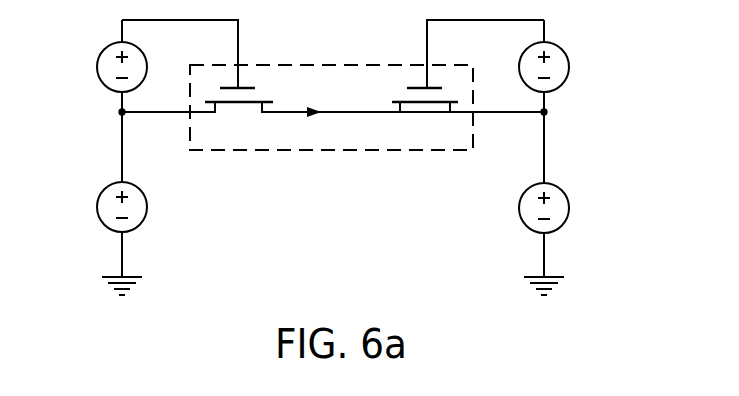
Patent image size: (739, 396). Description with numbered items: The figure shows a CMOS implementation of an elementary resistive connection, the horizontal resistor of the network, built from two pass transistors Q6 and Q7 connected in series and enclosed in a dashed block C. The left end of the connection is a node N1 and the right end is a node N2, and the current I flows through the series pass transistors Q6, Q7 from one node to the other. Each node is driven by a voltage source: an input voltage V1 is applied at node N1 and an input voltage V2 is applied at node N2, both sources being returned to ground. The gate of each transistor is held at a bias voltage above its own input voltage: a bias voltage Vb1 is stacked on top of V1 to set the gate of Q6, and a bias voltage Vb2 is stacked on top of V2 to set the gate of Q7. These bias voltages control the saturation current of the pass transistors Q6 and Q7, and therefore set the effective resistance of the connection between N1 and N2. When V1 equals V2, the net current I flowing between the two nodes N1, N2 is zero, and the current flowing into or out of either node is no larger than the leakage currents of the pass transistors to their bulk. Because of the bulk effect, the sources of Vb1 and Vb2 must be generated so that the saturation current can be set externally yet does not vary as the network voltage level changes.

The node N1 is at (120, 112).
The node N2 is at (546, 112).
The bias voltage Vb1 is at (135, 67).
The bias voltage Vb2 is at (558, 67).
The input voltage V1 is at (120, 189).
The input voltage V2 is at (548, 187).
The pass transistor Q6 is at (239, 112).
The pass transistor Q7 is at (425, 112).
The current I is at (328, 127).
The block C is at (338, 152).